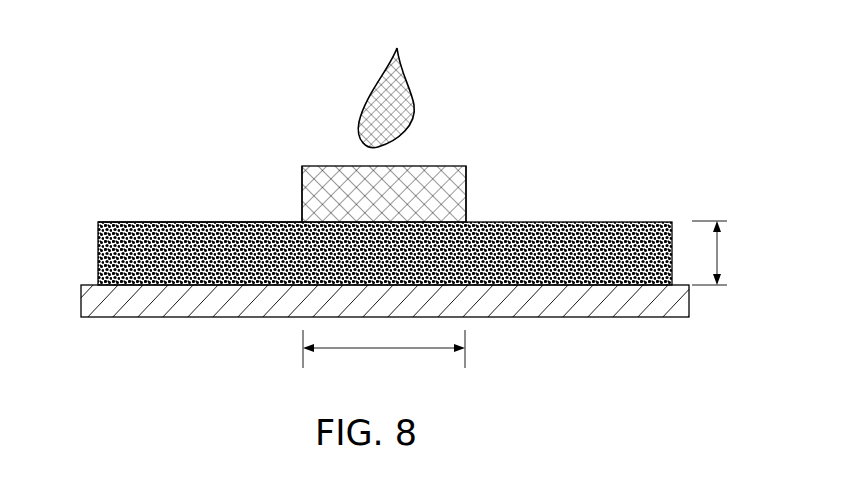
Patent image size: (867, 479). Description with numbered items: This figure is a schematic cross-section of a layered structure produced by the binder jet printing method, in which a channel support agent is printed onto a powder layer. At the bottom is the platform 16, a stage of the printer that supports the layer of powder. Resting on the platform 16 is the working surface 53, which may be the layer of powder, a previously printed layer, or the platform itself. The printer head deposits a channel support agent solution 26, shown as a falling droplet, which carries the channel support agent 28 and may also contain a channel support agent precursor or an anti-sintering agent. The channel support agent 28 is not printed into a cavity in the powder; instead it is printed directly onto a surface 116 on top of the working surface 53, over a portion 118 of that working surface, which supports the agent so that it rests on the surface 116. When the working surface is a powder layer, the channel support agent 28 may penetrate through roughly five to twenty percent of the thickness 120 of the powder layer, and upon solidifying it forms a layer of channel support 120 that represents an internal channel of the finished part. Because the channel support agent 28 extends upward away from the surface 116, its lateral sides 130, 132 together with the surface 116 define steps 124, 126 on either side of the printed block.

The platform 16 is at (81, 300).
The channel support agent solution 26 is at (410, 92).
The channel support agent 28 is at (447, 166).
The working surface 53 is at (98, 263).
The surface 116 is at (143, 222).
The portion 118 is at (385, 350).
The thickness / layer of channel support 120 is at (236, 187).
The step 124 is at (630, 204).
The step 126 is at (88, 205).
The lateral side 130 is at (467, 202).
The lateral side 132 is at (302, 191).